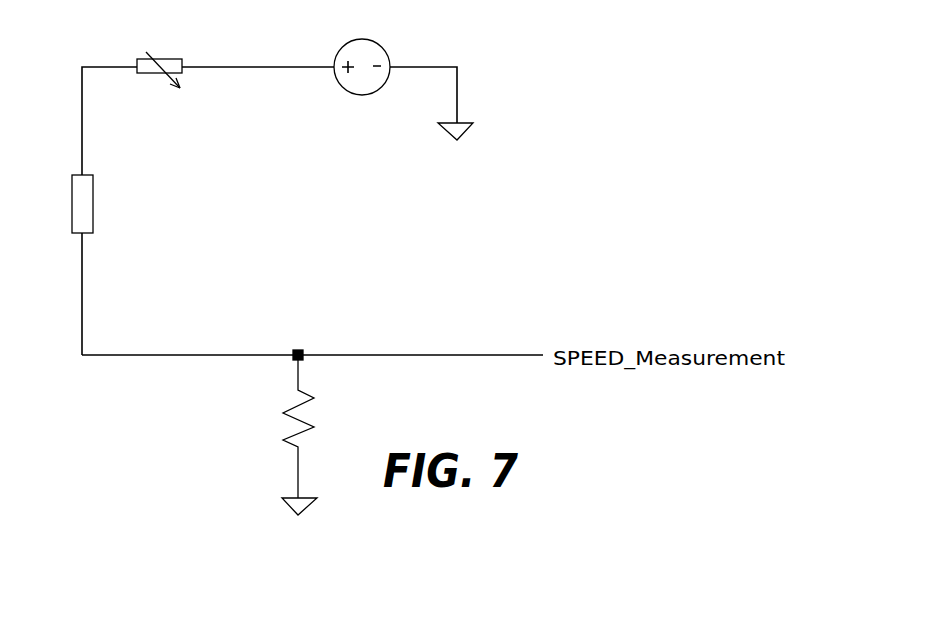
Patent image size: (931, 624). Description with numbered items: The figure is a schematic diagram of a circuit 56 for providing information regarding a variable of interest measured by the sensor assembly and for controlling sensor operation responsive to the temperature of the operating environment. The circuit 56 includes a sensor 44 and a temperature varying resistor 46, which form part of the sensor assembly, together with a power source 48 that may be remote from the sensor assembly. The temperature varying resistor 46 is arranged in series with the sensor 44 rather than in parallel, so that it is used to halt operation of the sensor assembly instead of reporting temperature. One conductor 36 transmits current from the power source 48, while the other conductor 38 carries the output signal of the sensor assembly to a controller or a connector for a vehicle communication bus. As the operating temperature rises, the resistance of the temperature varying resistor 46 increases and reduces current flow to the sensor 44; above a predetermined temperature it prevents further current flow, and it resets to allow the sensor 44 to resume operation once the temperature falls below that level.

The conductor 36 is at (293, 65).
The conductor 38 is at (245, 356).
The sensor 44 is at (85, 213).
The temperature varying resistor 46 is at (183, 70).
The power source 48 is at (390, 56).
The circuit 56 is at (585, 178).